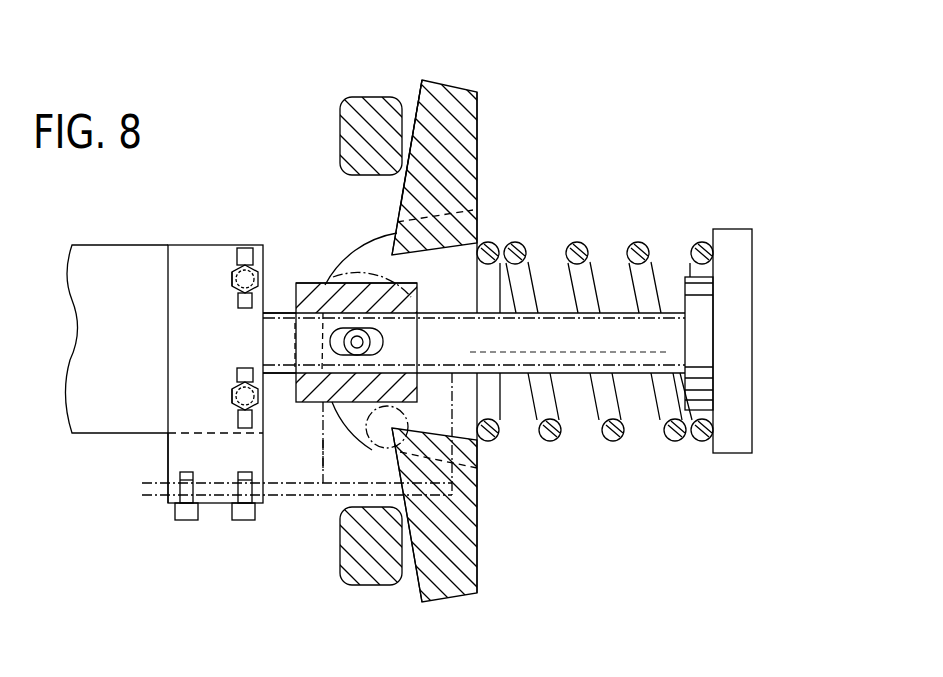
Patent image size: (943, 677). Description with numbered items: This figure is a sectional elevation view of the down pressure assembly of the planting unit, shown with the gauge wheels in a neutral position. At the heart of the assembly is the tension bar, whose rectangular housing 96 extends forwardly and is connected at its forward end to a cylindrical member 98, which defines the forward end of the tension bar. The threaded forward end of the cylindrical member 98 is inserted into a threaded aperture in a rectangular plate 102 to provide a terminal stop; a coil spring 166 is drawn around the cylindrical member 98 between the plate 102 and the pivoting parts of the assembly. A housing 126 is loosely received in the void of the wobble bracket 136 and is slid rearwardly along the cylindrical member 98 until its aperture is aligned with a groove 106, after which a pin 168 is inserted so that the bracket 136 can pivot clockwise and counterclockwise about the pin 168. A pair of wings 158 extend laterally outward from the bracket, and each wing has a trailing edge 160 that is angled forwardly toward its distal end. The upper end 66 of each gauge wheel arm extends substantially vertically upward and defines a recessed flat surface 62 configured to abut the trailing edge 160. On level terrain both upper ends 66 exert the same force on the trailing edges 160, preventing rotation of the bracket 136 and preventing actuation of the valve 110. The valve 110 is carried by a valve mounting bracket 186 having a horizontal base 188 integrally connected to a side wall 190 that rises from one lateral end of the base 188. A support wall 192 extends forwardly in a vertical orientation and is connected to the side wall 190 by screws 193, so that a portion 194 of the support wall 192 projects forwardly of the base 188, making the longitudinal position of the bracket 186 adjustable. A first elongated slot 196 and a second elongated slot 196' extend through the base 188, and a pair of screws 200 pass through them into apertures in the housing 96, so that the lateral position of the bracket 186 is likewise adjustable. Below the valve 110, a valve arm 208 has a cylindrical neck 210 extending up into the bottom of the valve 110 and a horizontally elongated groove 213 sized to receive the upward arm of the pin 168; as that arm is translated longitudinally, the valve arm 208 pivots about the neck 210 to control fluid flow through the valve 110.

The flat surface 62 is at (407, 120).
The upper end 66 is at (345, 127).
The rectangular housing 96 is at (120, 338).
The cylindrical member 98 is at (580, 373).
The rectangular plate 102 is at (753, 337).
The groove 106 is at (297, 395).
The valve 110 is at (297, 276).
The housing 126 is at (314, 453).
The wobble bracket 136 is at (485, 459).
The wing 158 is at (457, 76).
The trailing edge 160 is at (400, 187).
The spring 166 is at (583, 242).
The pin 168 is at (383, 339).
The valve mounting bracket 186 is at (165, 452).
The base 188 is at (167, 268).
The side wall 190 is at (217, 507).
The support wall 192 is at (147, 495).
The screws 193 is at (178, 520).
The portion of support wall 194 is at (318, 513).
The first elongated slot 196 is at (231, 253).
The second elongated slot 196' is at (220, 389).
The screws 200 is at (230, 277).
The valve arm 208 is at (415, 287).
The cylindrical neck 210 is at (367, 442).
The horizontally elongated groove 213 is at (353, 305).